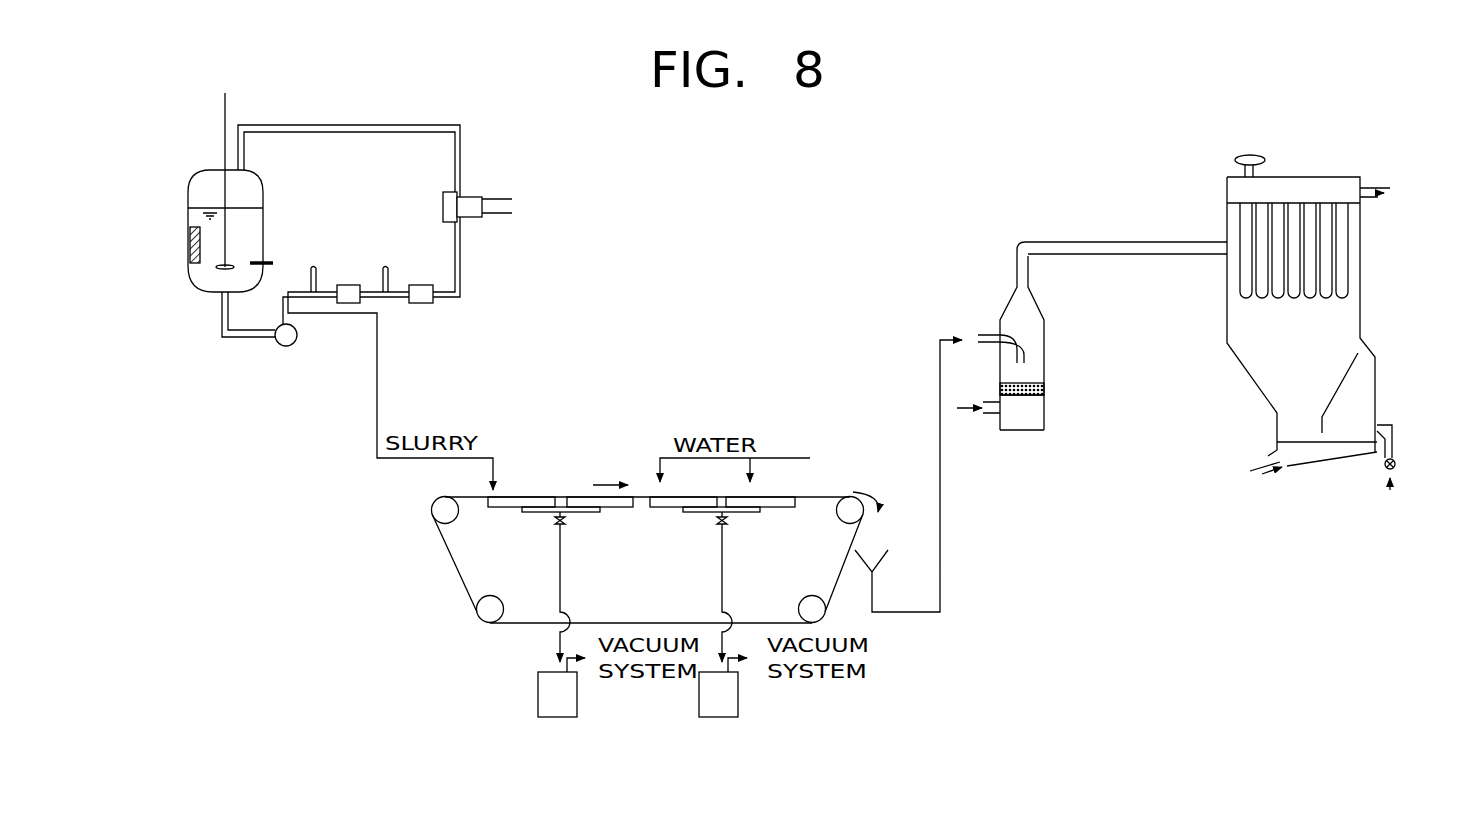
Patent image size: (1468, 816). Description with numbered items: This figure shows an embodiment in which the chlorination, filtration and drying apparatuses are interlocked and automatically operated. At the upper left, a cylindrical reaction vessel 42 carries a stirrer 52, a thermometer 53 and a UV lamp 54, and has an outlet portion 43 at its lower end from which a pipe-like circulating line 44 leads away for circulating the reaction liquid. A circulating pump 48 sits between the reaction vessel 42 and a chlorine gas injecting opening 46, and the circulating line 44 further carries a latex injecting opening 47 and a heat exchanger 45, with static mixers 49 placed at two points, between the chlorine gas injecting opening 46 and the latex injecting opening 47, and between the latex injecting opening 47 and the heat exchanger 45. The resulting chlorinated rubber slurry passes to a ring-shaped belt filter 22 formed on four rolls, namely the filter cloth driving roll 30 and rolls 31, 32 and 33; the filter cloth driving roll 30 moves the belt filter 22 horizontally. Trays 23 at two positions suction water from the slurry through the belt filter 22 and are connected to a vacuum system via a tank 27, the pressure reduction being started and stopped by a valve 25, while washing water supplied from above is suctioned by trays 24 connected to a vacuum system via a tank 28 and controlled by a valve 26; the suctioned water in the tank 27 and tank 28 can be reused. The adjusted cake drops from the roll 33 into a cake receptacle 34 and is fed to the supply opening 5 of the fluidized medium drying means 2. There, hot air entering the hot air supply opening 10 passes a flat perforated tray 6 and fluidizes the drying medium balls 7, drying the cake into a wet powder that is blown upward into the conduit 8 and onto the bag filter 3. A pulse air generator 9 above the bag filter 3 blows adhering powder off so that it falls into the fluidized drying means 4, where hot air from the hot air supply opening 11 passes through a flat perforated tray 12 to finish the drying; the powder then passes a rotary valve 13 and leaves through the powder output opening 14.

The fluidized medium drying means 2 is at (1043, 326).
The bag filter 3 is at (1362, 280).
The fluidized drying means 4 is at (1300, 350).
The supply opening 5 is at (972, 337).
The flat perforated tray 6 is at (1025, 396).
The drying medium balls 7 is at (1025, 383).
The conduit 8 is at (1084, 240).
The pulse air generator 9 is at (1250, 153).
The hot air supply opening 10 is at (962, 410).
The hot air supply opening 11 is at (1265, 460).
The flat perforated tray 12 is at (1347, 442).
The rotary valve 13 is at (1396, 464).
The powder output opening 14 is at (1392, 498).
The belt filter 22 is at (560, 492).
The trays 23 is at (496, 509).
The trays 24 is at (668, 509).
The valve 25 is at (566, 522).
The valve 26 is at (728, 526).
The tank 27 is at (560, 720).
The tank 28 is at (722, 720).
The filter cloth driving roll 30 is at (815, 592).
The roll 31 is at (490, 625).
The roll 32 is at (430, 512).
The roll 33 is at (852, 491).
The cake receptacle 34 is at (875, 578).
The reaction vessel 42 is at (187, 182).
The outlet portion 43 is at (210, 292).
The circulating line 44 is at (242, 340).
The heat exchanger 45 is at (465, 192).
The chlorine gas injecting opening 46 is at (313, 268).
The latex injecting opening 47 is at (385, 268).
The circulating pump 48 is at (287, 346).
The static mixers 49 is at (348, 285).
The stirrer 52 is at (225, 121).
The thermometer 53 is at (265, 258).
The UV lamp 54 is at (190, 237).